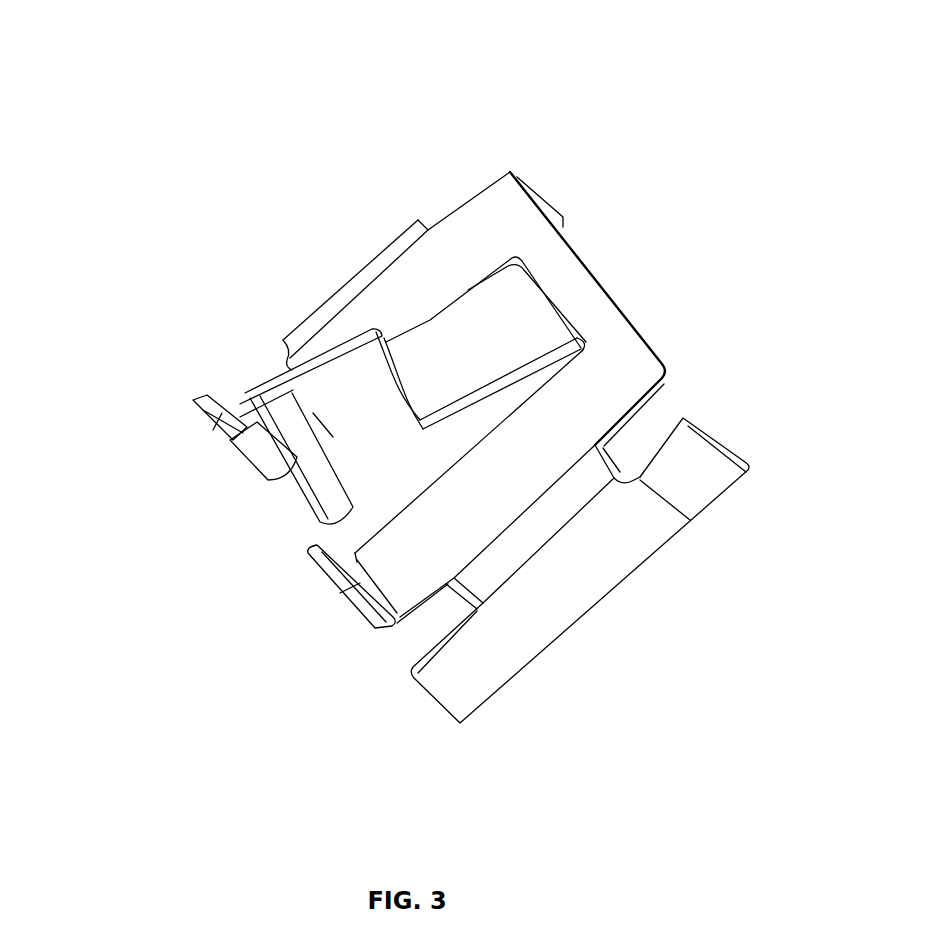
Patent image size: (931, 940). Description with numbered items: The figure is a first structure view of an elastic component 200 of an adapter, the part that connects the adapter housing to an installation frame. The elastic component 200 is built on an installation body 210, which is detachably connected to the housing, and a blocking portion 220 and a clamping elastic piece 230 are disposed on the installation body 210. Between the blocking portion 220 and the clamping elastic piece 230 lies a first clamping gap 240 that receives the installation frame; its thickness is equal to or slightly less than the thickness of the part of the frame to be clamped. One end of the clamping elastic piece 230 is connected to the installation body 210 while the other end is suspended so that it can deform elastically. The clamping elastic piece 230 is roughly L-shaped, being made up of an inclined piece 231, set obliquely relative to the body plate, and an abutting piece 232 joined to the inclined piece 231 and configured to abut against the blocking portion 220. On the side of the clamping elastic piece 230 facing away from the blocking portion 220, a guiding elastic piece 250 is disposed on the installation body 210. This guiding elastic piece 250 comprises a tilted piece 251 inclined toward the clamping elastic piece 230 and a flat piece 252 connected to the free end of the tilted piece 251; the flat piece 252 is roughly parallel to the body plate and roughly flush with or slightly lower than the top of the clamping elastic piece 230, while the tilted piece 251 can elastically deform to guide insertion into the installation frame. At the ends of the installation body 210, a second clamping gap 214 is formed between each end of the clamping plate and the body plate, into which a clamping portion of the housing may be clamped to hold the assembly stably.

The elastic component 200 is at (263, 262).
The installation body 210 is at (578, 283).
The second clamping gap 214 is at (643, 430).
The blocking portion 220 is at (195, 408).
The clamping elastic piece 230 is at (92, 263).
The inclined piece 231 is at (285, 343).
The abutting piece 232 is at (257, 417).
The first clamping gap 240 is at (202, 424).
The guiding elastic piece 250 is at (392, 76).
The tilted piece 251 is at (452, 348).
The flat piece 252 is at (363, 393).